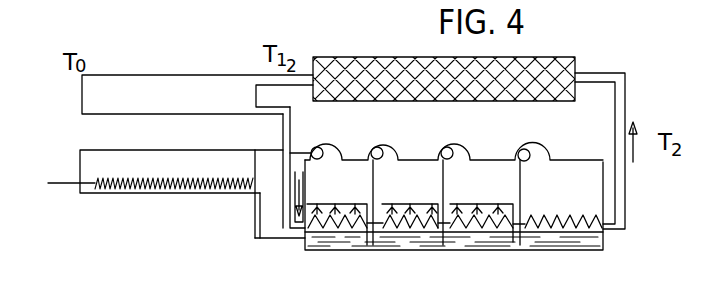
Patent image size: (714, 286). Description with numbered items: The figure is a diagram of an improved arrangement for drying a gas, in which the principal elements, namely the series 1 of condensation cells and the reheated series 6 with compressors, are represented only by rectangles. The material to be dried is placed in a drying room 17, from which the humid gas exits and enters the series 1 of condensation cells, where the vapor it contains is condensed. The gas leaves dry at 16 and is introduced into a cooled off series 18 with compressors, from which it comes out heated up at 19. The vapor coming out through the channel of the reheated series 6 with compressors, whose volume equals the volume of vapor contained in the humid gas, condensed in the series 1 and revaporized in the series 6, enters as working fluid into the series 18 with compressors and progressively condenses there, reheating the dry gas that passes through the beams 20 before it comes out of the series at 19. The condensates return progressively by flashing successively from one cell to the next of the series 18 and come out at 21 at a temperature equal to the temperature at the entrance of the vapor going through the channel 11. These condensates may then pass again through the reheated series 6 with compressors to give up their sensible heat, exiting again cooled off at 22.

The series of condensation cells 1 is at (183, 95).
The reheated series with compressors 6 is at (147, 198).
The channel 11 is at (280, 172).
The dry gas outlet 16 is at (272, 114).
The drying room 17 is at (404, 74).
The cooled off series with compressors 18 is at (497, 252).
The heated dry gas outlet 19 is at (630, 188).
The beams 20 is at (412, 218).
The condensate outlet 21 is at (288, 240).
The cooled condensate outlet 22 is at (67, 195).